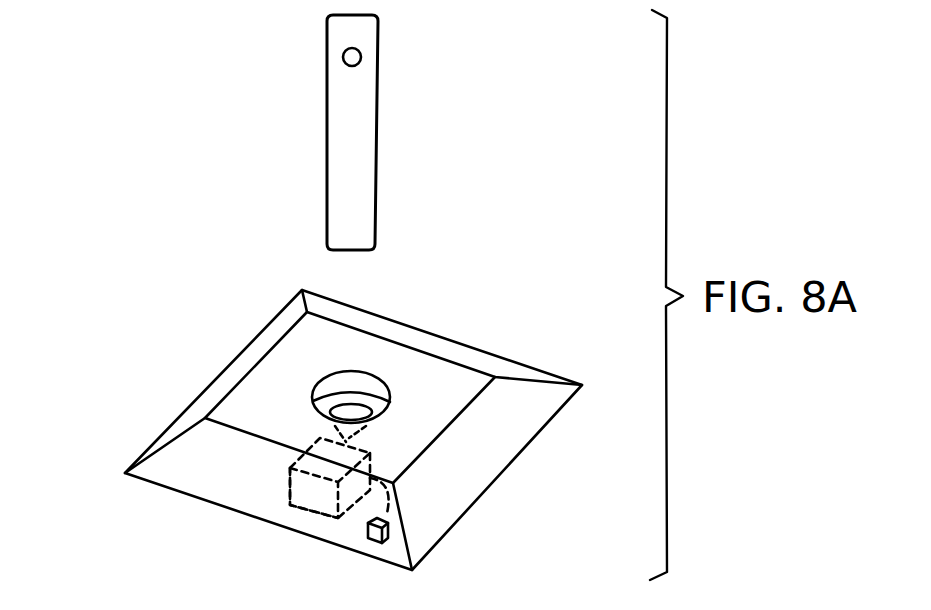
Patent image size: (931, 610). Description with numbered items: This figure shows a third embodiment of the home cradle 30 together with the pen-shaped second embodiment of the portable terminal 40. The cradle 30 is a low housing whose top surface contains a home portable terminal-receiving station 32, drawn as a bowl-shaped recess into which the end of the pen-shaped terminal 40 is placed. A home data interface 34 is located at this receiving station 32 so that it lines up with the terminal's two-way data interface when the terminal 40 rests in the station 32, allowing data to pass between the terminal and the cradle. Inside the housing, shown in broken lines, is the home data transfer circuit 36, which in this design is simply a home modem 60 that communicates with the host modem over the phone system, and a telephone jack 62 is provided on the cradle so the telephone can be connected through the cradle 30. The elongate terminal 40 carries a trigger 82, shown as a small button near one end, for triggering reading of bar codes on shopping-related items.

The home cradle 30 is at (478, 348).
The home portable terminal-receiving station 32 is at (340, 378).
The home data interface 34 is at (325, 403).
The home data transfer circuit 36 is at (283, 487).
The portable terminal 40 is at (377, 155).
The home modem 60 is at (313, 510).
The telephone jack 62 is at (390, 537).
The trigger 82 is at (362, 56).